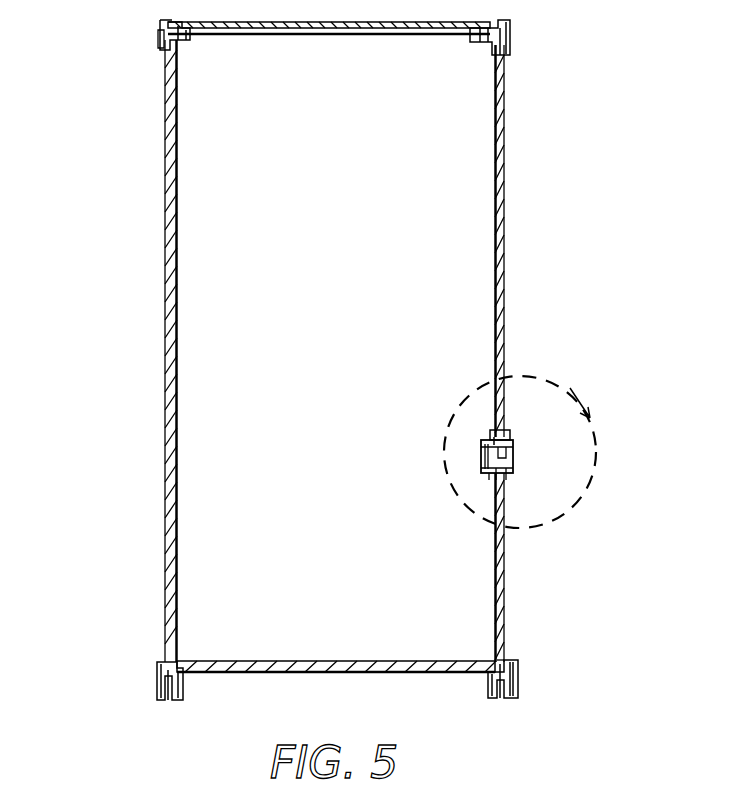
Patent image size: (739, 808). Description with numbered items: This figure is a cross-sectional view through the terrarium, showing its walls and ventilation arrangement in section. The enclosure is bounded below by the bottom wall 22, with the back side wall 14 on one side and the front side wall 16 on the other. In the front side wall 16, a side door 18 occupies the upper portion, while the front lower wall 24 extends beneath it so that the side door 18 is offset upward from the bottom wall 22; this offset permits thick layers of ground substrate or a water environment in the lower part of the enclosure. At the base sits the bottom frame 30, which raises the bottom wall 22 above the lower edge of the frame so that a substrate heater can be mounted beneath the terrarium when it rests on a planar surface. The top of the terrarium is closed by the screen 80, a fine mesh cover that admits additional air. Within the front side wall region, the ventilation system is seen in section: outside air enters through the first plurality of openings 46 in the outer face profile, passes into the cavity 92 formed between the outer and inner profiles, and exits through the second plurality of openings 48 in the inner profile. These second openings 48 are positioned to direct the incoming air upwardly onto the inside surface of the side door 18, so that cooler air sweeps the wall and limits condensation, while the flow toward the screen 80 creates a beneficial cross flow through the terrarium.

The back side wall 14 is at (165, 293).
The front side wall 16 is at (506, 568).
The side door 18 is at (505, 255).
The bottom wall 22 is at (410, 673).
The front lower wall 24 is at (523, 638).
The bottom frame 30 is at (160, 662).
The first plurality of openings 46 is at (513, 455).
The second plurality of openings 48 is at (490, 442).
The screen 80 is at (350, 36).
The cavity 92 is at (485, 470).